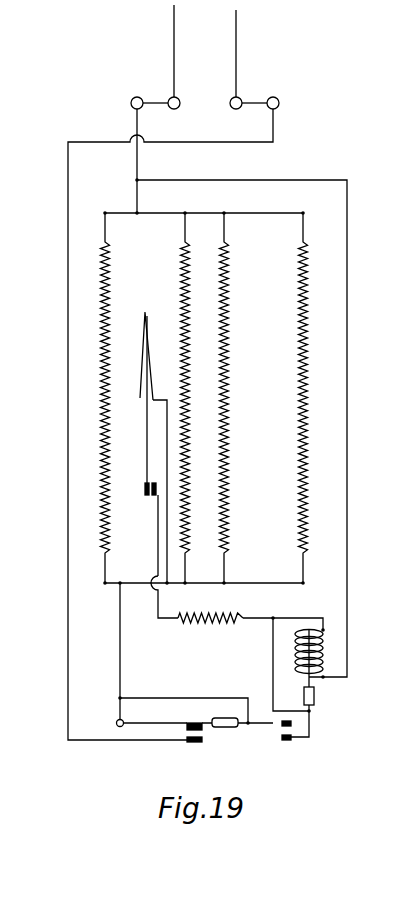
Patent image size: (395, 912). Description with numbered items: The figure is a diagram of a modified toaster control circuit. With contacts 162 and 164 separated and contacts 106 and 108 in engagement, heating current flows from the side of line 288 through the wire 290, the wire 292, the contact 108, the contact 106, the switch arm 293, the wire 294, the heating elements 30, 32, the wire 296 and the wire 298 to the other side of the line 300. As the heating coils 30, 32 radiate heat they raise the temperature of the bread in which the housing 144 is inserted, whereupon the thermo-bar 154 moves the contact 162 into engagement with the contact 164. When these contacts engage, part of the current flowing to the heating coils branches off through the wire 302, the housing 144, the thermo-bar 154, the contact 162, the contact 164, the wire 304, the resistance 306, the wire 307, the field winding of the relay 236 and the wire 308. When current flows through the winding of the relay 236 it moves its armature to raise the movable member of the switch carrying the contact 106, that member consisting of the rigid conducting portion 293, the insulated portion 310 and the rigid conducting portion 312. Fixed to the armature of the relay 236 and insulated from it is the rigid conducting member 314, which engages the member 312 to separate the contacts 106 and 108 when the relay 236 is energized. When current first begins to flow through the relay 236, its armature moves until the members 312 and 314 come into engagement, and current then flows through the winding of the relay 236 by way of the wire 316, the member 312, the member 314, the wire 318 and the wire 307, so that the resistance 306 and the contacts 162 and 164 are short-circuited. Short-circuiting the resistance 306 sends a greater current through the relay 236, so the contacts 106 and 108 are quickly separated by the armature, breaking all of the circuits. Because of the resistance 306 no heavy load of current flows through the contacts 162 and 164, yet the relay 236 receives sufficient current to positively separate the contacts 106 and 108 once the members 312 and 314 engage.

The other side of the line 300 is at (174, 33).
The side of line 288 is at (236, 48).
The wire 298 is at (150, 100).
The wire 290 is at (258, 100).
The wire 292 is at (273, 127).
The wire 296 is at (137, 169).
The wire 308 is at (313, 180).
The heating element 30 is at (103, 402).
The heating element 32 is at (226, 398).
The housing 144 is at (141, 358).
The wire 302 is at (161, 397).
The thermo-bar 154 is at (147, 437).
The contact 162 is at (145, 489).
The contact 164 is at (154, 497).
The wire 304 is at (161, 621).
The resistance 306 is at (234, 617).
The wire 307 is at (298, 617).
The relay 236 is at (327, 661).
The wire 318 is at (273, 673).
The rigid conducting member 314 is at (311, 728).
The rigid conducting portion 312 is at (263, 724).
The wire 294 is at (120, 647).
The wire 316 is at (172, 697).
The switch arm 293 is at (151, 722).
The contact 106 is at (203, 727).
The contact 108 is at (203, 743).
The insulated portion 310 is at (231, 716).